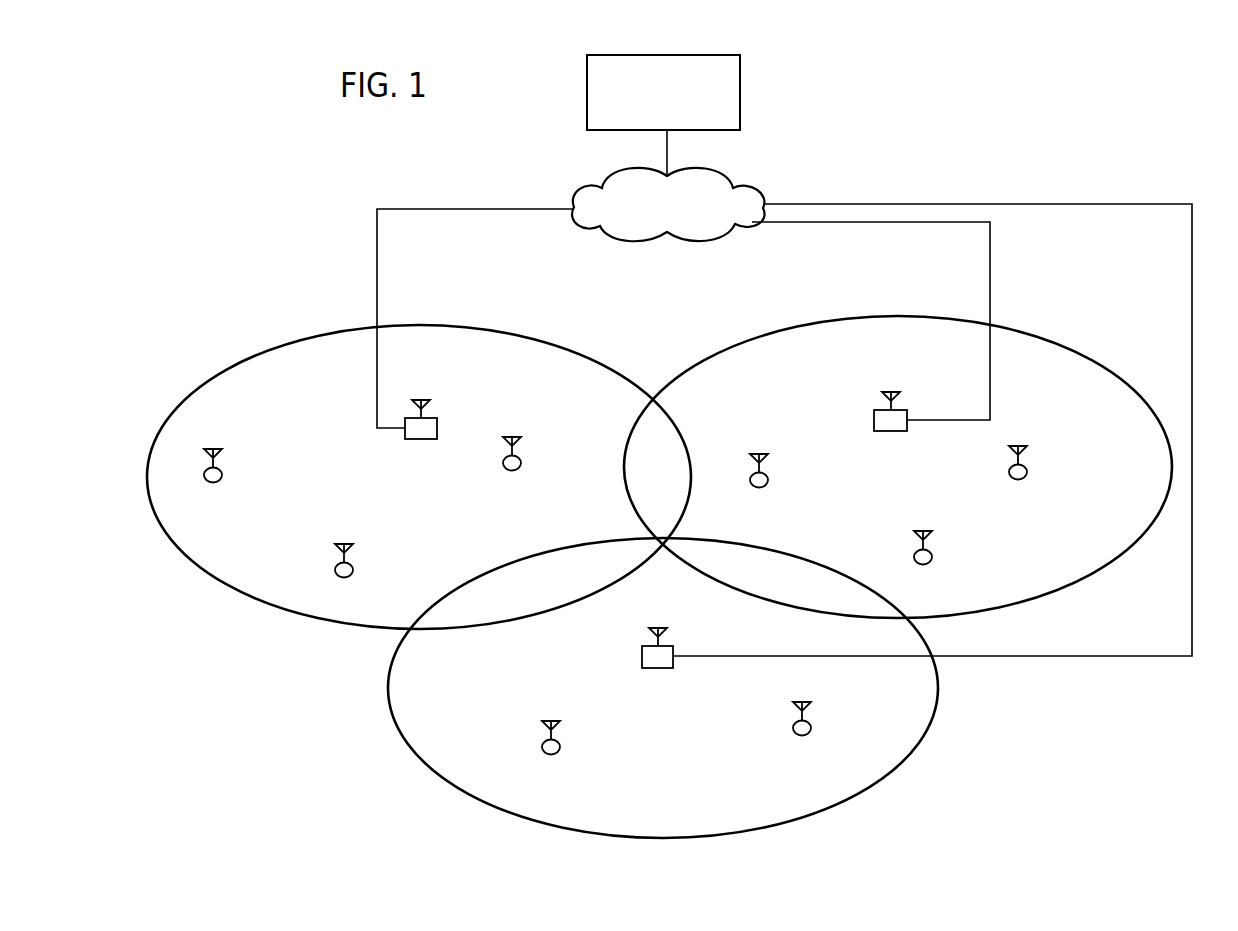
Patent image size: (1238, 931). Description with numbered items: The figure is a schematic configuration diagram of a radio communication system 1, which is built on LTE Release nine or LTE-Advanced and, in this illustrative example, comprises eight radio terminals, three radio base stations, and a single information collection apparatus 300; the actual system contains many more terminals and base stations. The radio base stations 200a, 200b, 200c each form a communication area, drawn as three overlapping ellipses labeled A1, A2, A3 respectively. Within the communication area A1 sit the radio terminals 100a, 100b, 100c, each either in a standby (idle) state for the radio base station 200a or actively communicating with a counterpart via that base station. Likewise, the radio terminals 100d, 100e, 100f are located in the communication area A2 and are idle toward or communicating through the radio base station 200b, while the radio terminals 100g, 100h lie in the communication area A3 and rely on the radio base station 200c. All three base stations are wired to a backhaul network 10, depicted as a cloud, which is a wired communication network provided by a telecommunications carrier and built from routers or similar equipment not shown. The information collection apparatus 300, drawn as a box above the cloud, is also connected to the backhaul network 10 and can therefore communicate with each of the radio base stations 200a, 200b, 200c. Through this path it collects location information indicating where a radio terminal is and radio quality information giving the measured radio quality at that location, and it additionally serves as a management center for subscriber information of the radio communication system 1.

The radio communication system 1 is at (1083, 129).
The backhaul network 10 is at (729, 178).
The information collection apparatus 300 is at (742, 88).
The radio base station 200a is at (437, 418).
The radio base station 200b is at (900, 408).
The radio base station 200c is at (670, 669).
The radio terminal 100a is at (521, 466).
The radio terminal 100b is at (353, 573).
The radio terminal 100c is at (222, 478).
The radio terminal 100d is at (1027, 476).
The radio terminal 100e is at (932, 561).
The radio terminal 100f is at (768, 483).
The radio terminal 100g is at (811, 731).
The radio terminal 100h is at (560, 750).
The communication area A1 is at (572, 347).
The communication area A2 is at (1066, 348).
The communication area A3 is at (938, 704).